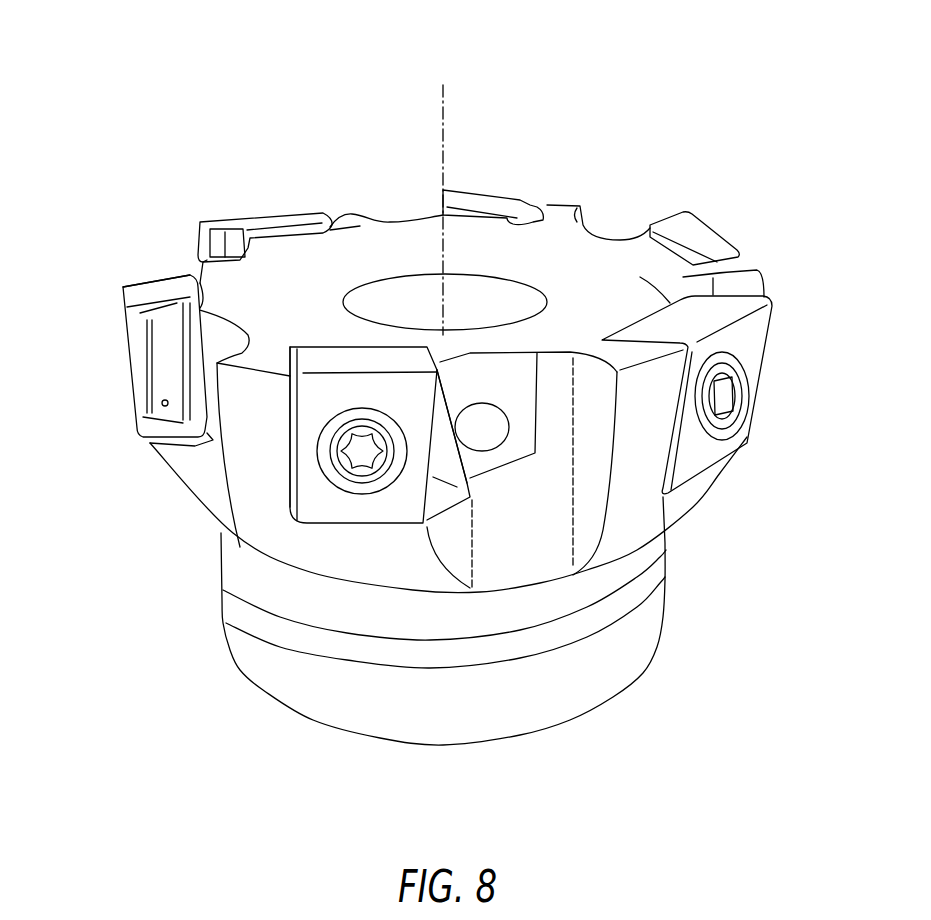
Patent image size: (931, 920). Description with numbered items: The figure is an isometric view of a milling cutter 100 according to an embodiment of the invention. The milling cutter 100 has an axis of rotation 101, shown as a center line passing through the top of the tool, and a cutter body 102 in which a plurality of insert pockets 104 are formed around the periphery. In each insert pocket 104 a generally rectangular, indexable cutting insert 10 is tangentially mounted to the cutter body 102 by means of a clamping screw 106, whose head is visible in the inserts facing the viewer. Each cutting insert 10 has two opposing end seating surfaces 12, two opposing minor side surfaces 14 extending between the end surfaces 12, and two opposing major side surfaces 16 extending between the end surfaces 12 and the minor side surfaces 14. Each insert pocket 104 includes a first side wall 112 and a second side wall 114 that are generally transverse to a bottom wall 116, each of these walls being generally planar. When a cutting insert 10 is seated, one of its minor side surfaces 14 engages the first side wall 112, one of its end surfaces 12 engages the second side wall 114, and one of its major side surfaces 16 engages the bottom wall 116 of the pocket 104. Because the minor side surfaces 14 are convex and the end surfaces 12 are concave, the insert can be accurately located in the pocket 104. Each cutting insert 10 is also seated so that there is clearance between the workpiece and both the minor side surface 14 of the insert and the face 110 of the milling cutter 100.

The cutting insert 10 is at (228, 205).
The end seating surface 12 is at (162, 372).
The minor side surface 14 is at (150, 288).
The major side surface 16 is at (120, 362).
The milling cutter 100 is at (615, 72).
The axis of rotation 101 is at (443, 110).
The cutter body 102 is at (640, 517).
The insert pocket 104 is at (177, 453).
The clamping screw 106 is at (352, 476).
The face 110 is at (353, 232).
The first side wall 112 is at (410, 532).
The second side wall 114 is at (305, 427).
The bottom wall 116 is at (308, 352).